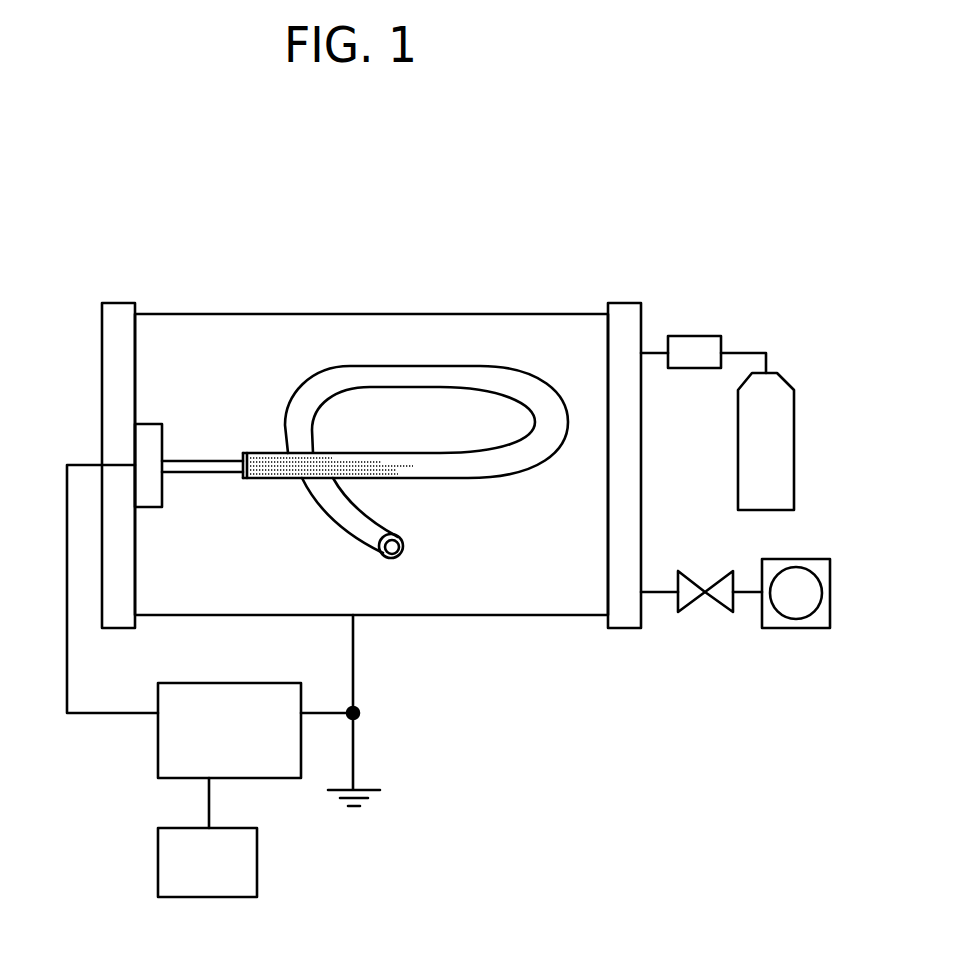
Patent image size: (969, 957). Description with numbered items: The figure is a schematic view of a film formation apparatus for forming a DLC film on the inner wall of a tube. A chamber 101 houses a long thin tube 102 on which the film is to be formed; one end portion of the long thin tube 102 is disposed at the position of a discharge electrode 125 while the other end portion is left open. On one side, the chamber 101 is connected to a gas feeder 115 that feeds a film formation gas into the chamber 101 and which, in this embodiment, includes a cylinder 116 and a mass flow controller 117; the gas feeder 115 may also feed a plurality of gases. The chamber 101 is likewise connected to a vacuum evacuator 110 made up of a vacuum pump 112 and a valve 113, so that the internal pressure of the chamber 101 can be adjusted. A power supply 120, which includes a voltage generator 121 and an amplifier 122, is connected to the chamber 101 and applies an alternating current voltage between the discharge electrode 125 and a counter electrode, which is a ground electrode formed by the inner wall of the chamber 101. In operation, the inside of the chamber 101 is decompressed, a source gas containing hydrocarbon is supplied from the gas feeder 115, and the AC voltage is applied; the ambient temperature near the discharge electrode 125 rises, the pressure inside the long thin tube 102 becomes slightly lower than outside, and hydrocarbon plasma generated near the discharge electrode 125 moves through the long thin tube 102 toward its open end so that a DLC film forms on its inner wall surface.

The chamber 101 is at (481, 314).
The long thin tube 102 is at (350, 366).
The discharge electrode 125 is at (196, 455).
The gas feeder 115 is at (720, 350).
The cylinder 116 is at (768, 385).
The mass flow controller 117 is at (692, 336).
The vacuum evacuator 110 is at (735, 672).
The vacuum pump 112 is at (795, 638).
The valve 113 is at (693, 612).
The power supply 120 is at (337, 792).
The voltage generator 121 is at (257, 877).
The amplifier 122 is at (265, 779).